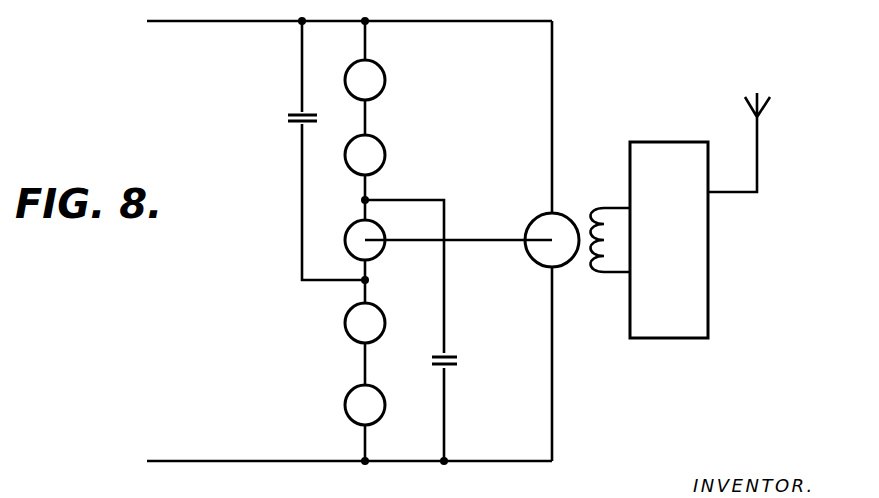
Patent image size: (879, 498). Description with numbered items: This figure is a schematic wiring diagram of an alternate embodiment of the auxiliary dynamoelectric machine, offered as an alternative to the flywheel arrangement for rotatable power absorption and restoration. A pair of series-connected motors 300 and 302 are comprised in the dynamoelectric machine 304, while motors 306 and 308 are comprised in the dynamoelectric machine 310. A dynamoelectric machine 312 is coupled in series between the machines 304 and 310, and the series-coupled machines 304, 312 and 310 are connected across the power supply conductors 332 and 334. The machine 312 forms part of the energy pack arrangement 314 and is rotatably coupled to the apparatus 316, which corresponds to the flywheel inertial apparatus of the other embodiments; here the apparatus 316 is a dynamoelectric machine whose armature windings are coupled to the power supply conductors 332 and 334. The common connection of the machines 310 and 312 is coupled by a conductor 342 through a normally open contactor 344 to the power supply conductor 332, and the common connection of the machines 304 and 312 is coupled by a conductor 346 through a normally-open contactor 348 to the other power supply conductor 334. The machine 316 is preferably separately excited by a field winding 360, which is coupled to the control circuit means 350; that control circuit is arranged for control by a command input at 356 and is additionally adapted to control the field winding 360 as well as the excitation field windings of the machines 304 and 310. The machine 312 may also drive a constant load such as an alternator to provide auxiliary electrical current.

The motor 300 is at (384, 74).
The motor 302 is at (384, 161).
The dynamoelectric machine 304 is at (411, 107).
The motor 306 is at (345, 405).
The motor 308 is at (345, 323).
The dynamoelectric machine 310 is at (322, 364).
The dynamoelectric machine 312 is at (417, 266).
The energy pack arrangement 314 is at (468, 180).
The apparatus 316 is at (534, 221).
The power supply conductor 332 is at (207, 22).
The power supply conductor 334 is at (247, 431).
The conductor 342 is at (302, 208).
The normally open contactor 344 is at (288, 116).
The conductor 346 is at (445, 312).
The normally-open contactor 348 is at (457, 357).
The control circuit means 350 is at (682, 265).
The command input 356 is at (758, 160).
The field winding 360 is at (601, 207).